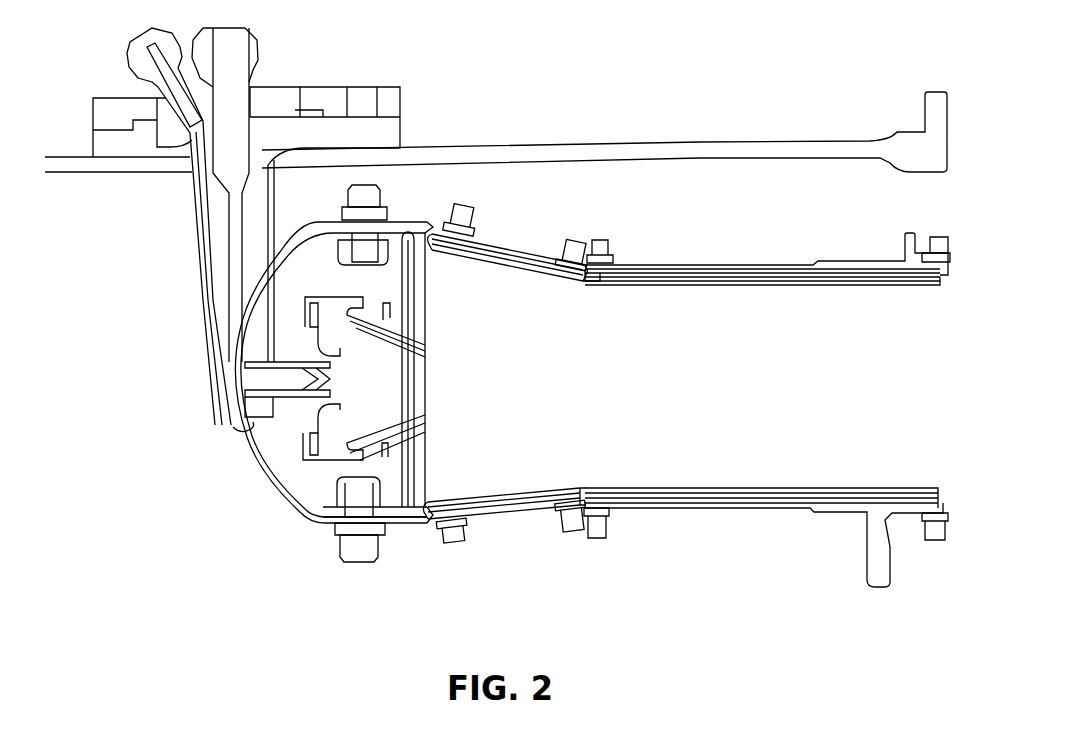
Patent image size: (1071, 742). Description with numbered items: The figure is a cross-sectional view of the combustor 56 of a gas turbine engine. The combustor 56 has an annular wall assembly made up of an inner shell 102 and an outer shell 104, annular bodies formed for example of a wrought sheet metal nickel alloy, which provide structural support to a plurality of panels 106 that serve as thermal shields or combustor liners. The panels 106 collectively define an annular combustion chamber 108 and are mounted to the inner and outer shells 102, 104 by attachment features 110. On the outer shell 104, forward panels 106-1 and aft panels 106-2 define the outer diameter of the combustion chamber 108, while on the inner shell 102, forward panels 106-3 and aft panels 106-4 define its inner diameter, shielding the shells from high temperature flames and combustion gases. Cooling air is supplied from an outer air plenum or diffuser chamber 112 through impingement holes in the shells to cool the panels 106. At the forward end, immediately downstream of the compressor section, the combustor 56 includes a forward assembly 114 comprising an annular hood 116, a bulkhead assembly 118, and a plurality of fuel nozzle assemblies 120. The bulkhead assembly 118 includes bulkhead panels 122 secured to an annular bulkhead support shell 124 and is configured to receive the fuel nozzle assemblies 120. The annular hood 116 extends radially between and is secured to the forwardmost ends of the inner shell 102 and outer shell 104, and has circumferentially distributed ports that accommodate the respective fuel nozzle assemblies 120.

The combustor 56 is at (791, 160).
The inner shell 102 is at (710, 510).
The outer shell 104 is at (748, 265).
The panels 106 is at (477, 257).
The forward panels 106-1 is at (557, 278).
The aft panels 106-2 is at (777, 286).
The forward panels 106-3 is at (563, 487).
The aft panels 106-4 is at (761, 477).
The combustion chamber 108 is at (817, 401).
The attachment features 110 is at (462, 205).
The diffuser chamber 112 is at (723, 186).
The forward assembly 114 is at (210, 447).
The annular hood 116 is at (268, 487).
The bulkhead assembly 118 is at (445, 462).
The fuel nozzle assemblies 120 is at (175, 208).
The bulkhead panels 122 is at (430, 287).
The bulkhead support shell 124 is at (403, 280).